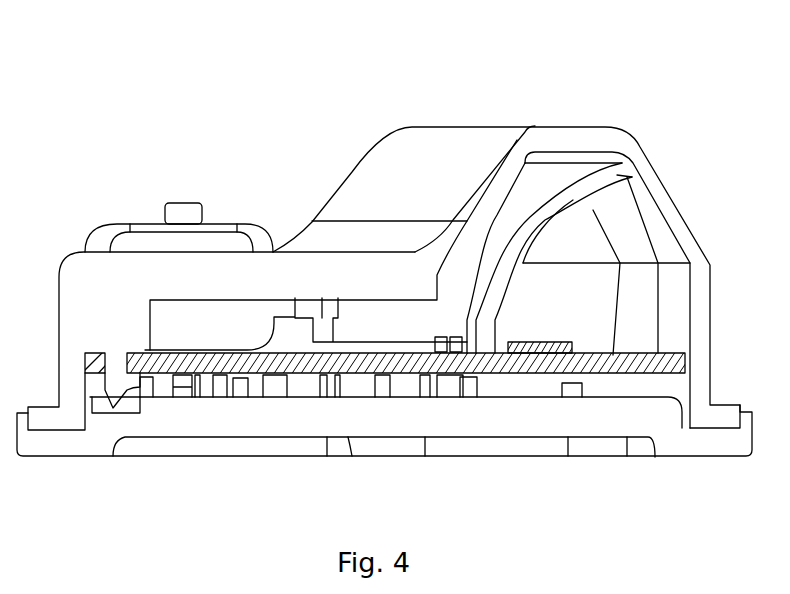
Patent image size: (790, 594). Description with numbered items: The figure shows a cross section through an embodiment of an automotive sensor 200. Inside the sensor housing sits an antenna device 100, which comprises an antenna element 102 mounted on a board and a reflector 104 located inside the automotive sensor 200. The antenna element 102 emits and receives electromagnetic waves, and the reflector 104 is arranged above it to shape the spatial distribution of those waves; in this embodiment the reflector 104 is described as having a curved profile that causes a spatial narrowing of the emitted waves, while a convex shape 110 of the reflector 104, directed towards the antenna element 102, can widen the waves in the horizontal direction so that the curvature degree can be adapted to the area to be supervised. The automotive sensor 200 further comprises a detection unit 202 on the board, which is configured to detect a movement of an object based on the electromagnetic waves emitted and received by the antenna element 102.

The automotive sensor 200 is at (384, 310).
The antenna device 100 is at (625, 377).
The antenna element 102 is at (563, 357).
The reflector 104 is at (617, 177).
The convex shape 110 is at (560, 227).
The detection unit 202 is at (567, 360).